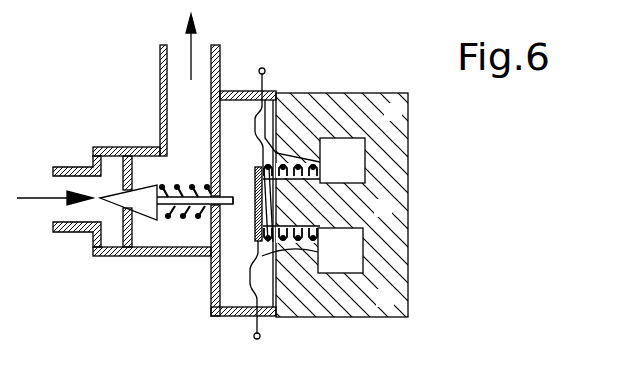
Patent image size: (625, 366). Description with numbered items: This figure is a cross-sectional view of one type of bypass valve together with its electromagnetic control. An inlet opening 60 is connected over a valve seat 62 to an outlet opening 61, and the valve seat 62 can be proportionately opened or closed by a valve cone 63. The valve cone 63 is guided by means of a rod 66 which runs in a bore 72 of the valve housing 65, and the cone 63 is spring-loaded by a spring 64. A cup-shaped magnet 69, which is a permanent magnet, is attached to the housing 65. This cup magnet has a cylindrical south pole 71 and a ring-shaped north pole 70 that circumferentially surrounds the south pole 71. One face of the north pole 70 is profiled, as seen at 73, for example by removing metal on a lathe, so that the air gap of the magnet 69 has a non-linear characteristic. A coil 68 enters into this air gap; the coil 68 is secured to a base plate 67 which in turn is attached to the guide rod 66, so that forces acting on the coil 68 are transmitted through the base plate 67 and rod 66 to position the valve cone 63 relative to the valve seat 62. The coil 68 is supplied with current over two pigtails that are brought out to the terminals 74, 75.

The inlet opening 60 is at (62, 214).
The outlet opening 61 is at (200, 55).
The valve seat 62 is at (133, 228).
The valve cone 63 is at (139, 172).
The spring 64 is at (178, 186).
The valve housing 65 is at (222, 78).
The rod 66 is at (232, 207).
The base plate 67 is at (262, 166).
The coil 68 is at (320, 163).
The cup-shaped magnet 69 is at (398, 172).
The north pole 70 is at (305, 100).
The south pole 71 is at (337, 230).
The bore 72 is at (245, 178).
The profiled face 73 is at (255, 125).
The terminal 74 is at (263, 68).
The terminal 75 is at (254, 336).